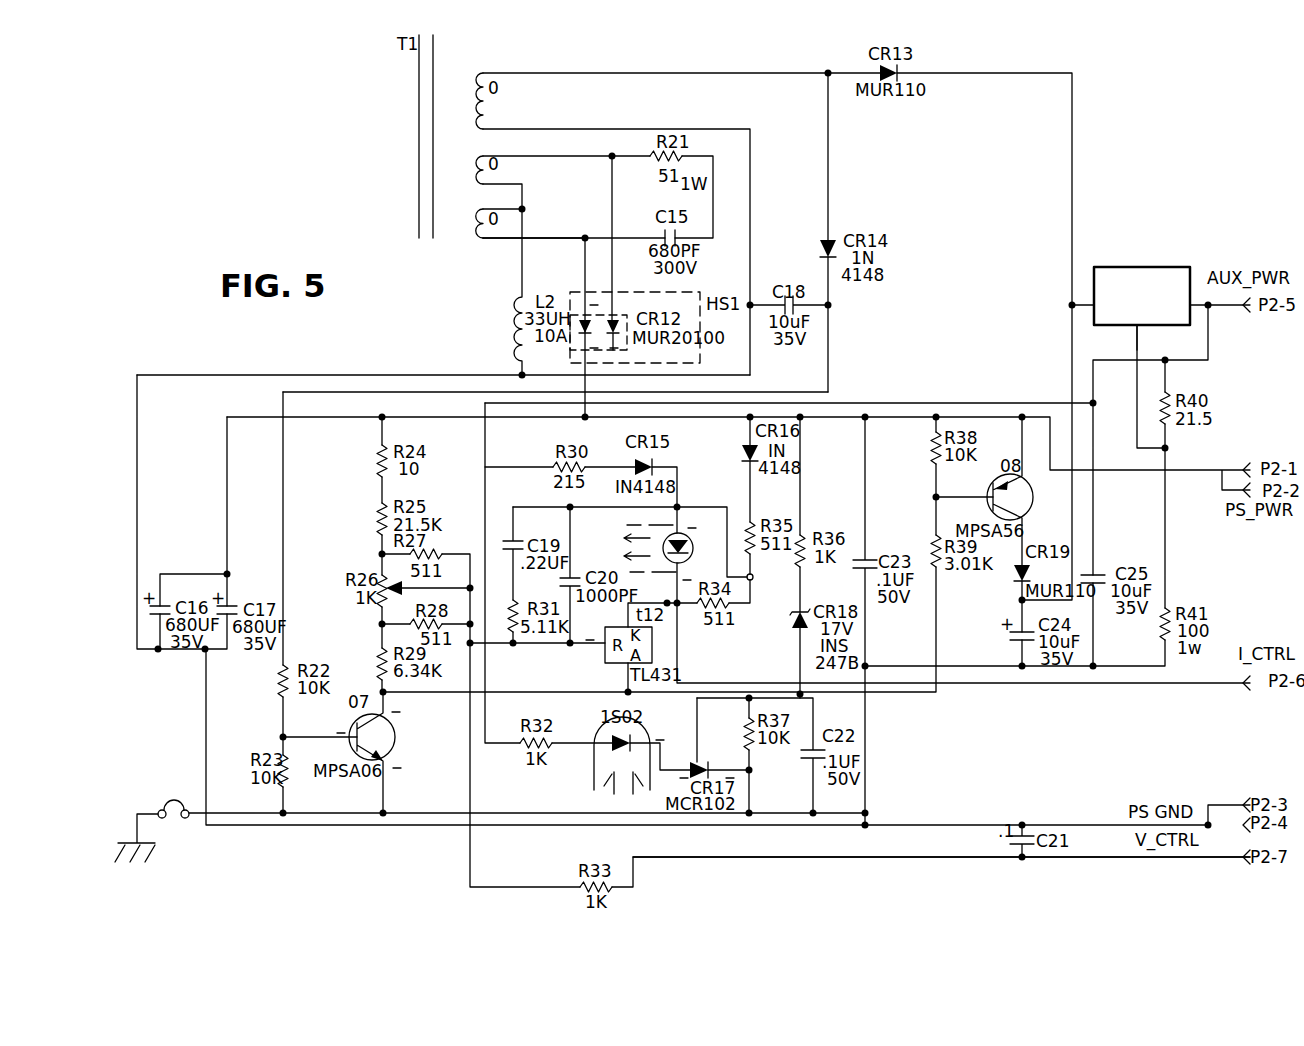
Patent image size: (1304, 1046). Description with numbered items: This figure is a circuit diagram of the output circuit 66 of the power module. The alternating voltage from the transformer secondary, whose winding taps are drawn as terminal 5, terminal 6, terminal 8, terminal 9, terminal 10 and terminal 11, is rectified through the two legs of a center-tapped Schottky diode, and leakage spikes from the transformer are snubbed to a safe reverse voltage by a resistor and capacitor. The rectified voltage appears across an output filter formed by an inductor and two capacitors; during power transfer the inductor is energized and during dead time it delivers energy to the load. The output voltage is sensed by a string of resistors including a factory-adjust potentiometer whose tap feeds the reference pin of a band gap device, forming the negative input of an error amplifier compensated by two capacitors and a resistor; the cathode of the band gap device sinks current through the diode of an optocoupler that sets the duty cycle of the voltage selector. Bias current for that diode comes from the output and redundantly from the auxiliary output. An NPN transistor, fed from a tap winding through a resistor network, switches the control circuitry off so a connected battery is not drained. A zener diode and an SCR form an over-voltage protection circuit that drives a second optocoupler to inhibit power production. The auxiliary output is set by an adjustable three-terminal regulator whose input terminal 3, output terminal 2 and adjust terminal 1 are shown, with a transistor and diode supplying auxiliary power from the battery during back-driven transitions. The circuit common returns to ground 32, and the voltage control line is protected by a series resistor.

The output circuit 66 is at (1140, 217).
The chassis ground connection 32 is at (152, 831).
The transformer T1 winding pin 5 is at (681, 66).
The transformer T1 winding pin 6 is at (616, 252).
The transformer T1 winding pin 8 is at (502, 196).
The transformer T1 winding pin 9 is at (498, 206).
The power supply 10 is at (556, 150).
The transformer T1 winding pin 11 is at (532, 249).
The regulator U3 ADJ pin 1 is at (1145, 337).
The regulator U3 OUT pin 2 is at (1199, 292).
The regulator U3 IN pin 3 is at (1083, 293).